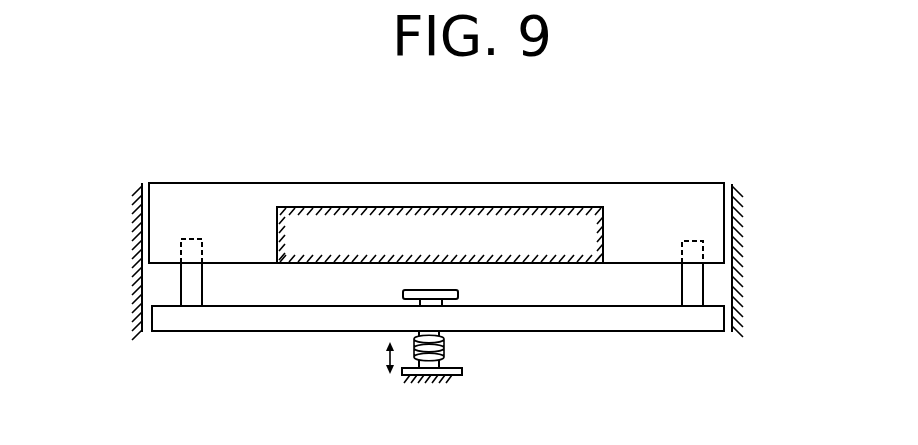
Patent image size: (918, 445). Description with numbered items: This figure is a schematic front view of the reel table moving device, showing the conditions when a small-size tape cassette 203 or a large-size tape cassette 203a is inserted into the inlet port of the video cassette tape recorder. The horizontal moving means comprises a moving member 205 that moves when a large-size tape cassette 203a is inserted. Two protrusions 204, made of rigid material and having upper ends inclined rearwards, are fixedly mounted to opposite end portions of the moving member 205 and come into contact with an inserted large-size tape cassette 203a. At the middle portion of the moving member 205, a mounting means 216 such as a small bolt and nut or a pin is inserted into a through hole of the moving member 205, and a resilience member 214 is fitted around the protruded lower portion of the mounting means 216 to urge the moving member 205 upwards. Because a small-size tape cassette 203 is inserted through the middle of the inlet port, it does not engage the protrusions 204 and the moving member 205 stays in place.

The small-size tape cassette 203 is at (533, 207).
The large-size tape cassette 203a is at (659, 215).
The protrusion 204 is at (183, 290).
The moving member 205 is at (258, 317).
The resilience member 214 is at (462, 350).
The mounting means 216 is at (415, 295).